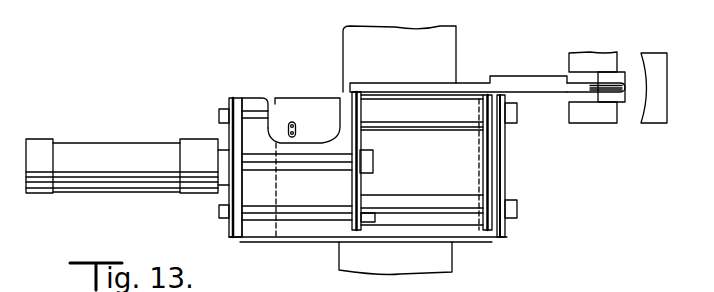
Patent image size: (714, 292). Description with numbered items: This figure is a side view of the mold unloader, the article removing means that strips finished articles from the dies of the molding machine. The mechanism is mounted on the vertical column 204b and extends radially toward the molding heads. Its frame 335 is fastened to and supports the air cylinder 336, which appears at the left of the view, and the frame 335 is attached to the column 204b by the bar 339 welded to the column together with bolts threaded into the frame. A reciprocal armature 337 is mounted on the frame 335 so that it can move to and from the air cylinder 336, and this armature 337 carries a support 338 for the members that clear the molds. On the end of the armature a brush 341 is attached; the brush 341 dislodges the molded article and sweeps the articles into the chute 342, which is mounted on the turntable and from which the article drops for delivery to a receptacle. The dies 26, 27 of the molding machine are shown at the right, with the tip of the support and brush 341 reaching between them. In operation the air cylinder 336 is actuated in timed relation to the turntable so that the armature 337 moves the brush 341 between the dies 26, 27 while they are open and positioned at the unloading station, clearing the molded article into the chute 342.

The air cylinder 336 is at (107, 149).
The frame 335 is at (248, 98).
The bar 339 is at (305, 105).
The reciprocal armature 337 is at (492, 162).
The vertical column 204b is at (452, 42).
The support 338 is at (465, 90).
The brush 341 is at (577, 88).
The die 26 is at (612, 57).
The die 27 is at (603, 118).
The chute 342 is at (652, 116).